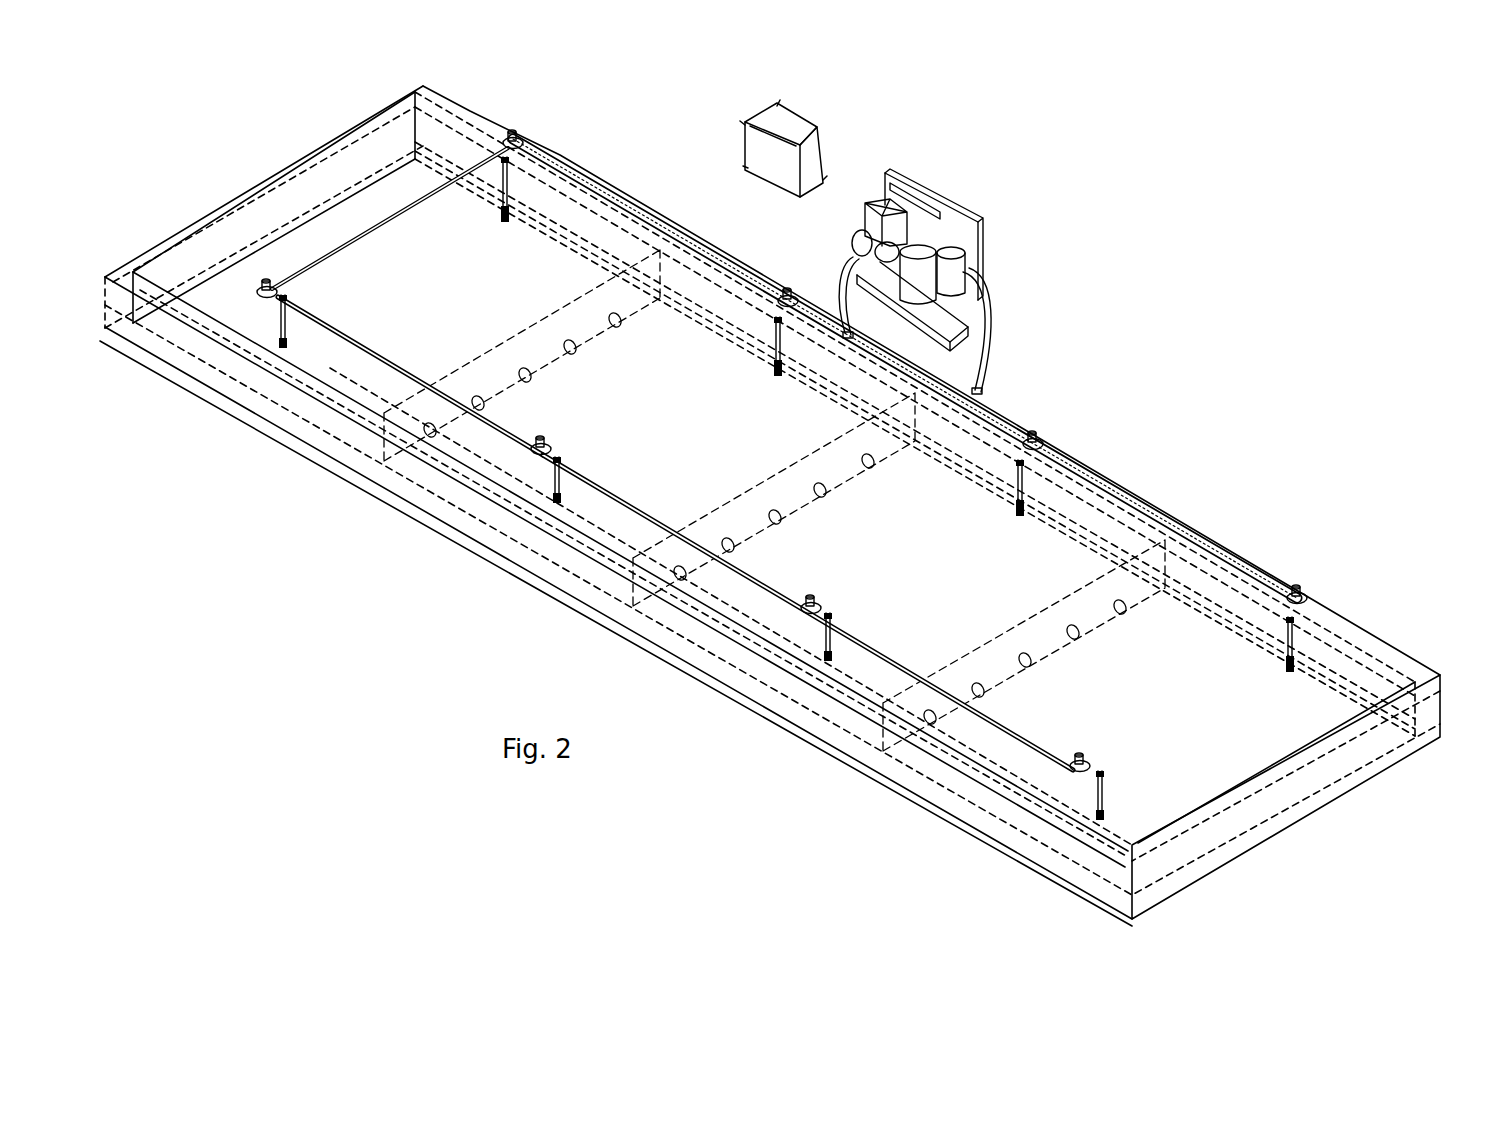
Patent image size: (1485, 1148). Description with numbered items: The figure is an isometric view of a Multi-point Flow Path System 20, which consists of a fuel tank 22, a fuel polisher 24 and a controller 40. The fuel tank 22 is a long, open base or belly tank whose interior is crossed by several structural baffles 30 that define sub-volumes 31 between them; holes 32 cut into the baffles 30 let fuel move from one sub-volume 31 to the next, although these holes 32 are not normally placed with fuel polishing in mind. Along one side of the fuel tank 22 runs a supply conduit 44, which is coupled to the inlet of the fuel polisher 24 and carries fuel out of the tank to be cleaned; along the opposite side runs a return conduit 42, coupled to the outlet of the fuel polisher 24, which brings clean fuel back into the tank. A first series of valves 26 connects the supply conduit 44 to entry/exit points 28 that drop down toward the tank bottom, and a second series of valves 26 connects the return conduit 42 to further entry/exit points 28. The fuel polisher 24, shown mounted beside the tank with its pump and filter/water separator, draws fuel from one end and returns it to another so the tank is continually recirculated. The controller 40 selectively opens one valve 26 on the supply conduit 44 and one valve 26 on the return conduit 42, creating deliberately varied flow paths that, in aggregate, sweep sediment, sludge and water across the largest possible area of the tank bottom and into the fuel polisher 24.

The Multi-point Flow Path System 20 is at (1352, 340).
The fuel tank 22 is at (1358, 628).
The fuel polisher 24 is at (955, 198).
The valve 26 is at (520, 137).
The entry/exit point 28 is at (500, 226).
The baffle 30 is at (690, 528).
The sub-volume 31 is at (1170, 785).
The hole 32 is at (830, 492).
The controller 40 is at (795, 122).
The return conduit 42 is at (362, 352).
The supply conduit 44 is at (1113, 482).